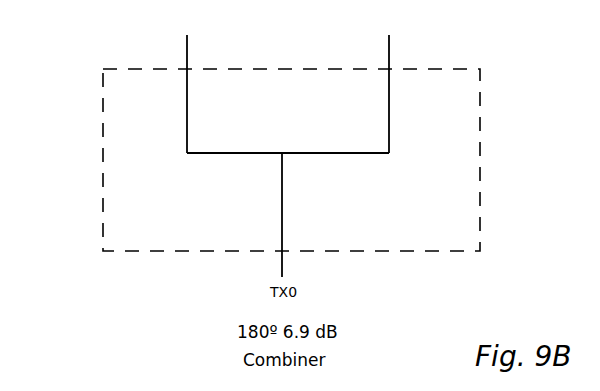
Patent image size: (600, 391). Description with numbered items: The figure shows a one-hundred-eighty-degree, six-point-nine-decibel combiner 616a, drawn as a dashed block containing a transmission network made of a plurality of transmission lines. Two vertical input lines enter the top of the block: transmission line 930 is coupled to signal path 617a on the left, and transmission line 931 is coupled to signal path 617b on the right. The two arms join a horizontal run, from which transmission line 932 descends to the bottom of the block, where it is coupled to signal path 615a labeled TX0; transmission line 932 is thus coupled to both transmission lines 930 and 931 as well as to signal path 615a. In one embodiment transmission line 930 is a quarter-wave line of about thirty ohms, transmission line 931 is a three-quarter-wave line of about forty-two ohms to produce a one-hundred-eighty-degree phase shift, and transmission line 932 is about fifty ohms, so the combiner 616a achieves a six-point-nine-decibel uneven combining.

The 180° 6.9 dB combiner 616a is at (103, 69).
The signal path 617a is at (187, 58).
The signal path 617b is at (389, 58).
The transmission line 930 is at (187, 153).
The transmission line 931 is at (389, 153).
The transmission line 932 is at (282, 203).
The signal path 615a is at (282, 264).